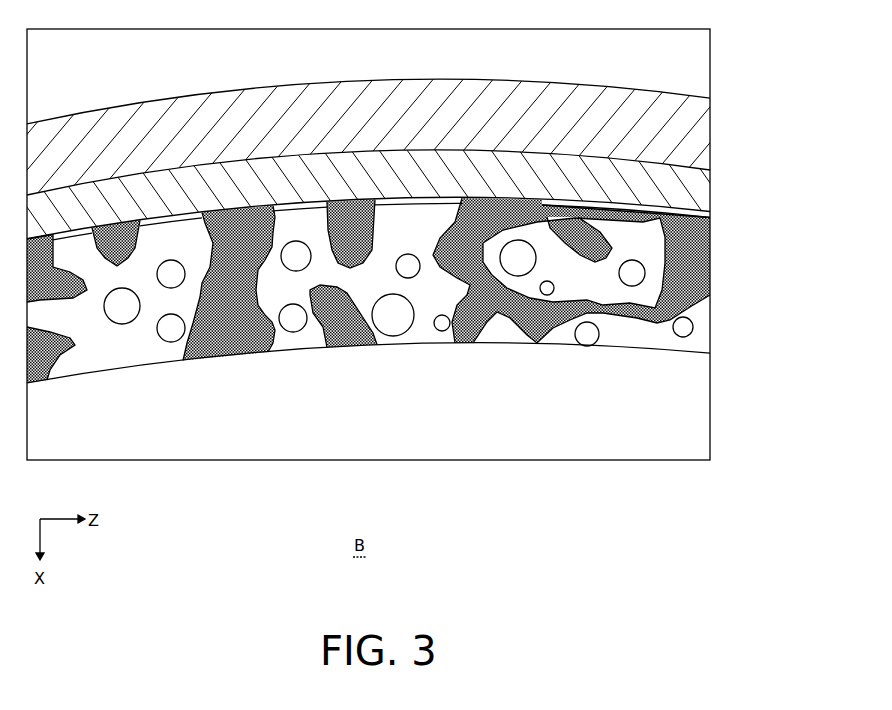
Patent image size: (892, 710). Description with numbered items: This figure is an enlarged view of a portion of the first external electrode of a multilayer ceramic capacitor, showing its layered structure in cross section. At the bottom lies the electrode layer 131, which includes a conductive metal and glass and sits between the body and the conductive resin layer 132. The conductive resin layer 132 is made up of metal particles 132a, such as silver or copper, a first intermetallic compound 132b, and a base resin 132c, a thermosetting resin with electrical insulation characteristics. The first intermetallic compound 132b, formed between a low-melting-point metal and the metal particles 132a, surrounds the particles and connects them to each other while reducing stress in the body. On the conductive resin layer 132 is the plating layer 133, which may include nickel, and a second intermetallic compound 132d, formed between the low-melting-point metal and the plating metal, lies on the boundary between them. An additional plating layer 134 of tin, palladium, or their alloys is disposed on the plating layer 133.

The electrode layer 131 is at (692, 413).
The conductive resin layer 132 is at (439, 291).
The metal particles 132a is at (690, 333).
The first intermetallic compound 132b is at (706, 268).
The base resin 132c is at (703, 296).
The second intermetallic compound 132d is at (700, 227).
The plating layer 133 is at (694, 185).
The additional plating layer 134 is at (694, 130).